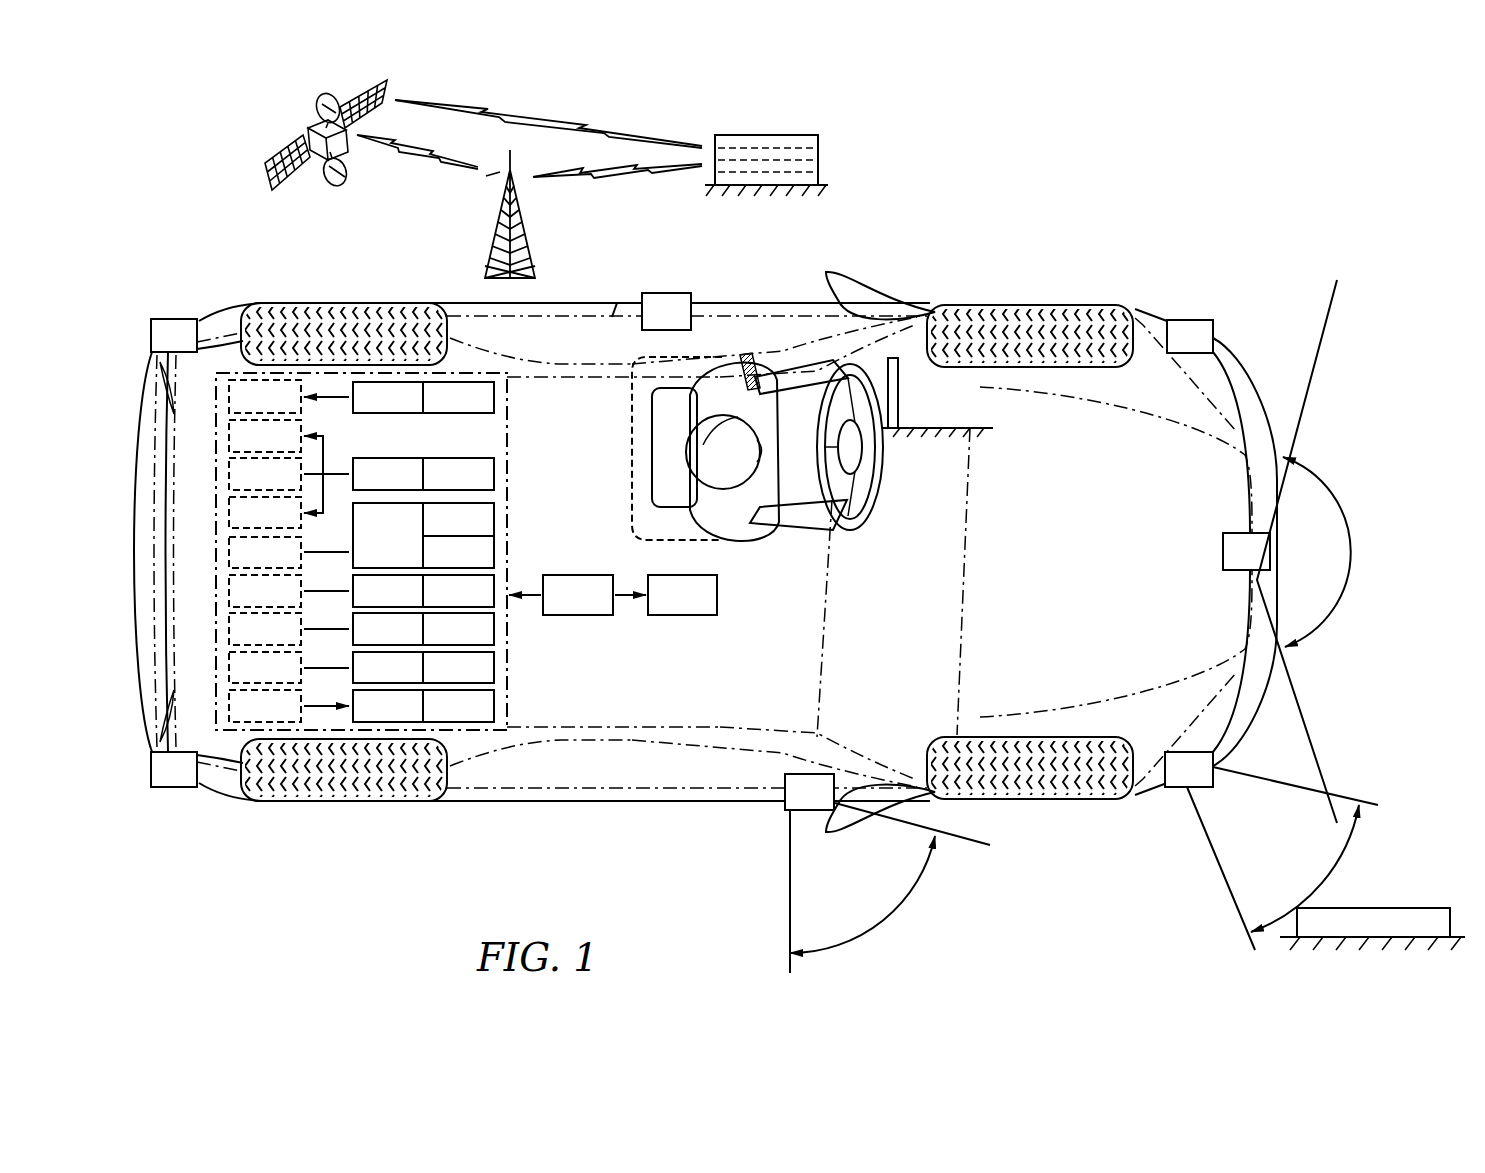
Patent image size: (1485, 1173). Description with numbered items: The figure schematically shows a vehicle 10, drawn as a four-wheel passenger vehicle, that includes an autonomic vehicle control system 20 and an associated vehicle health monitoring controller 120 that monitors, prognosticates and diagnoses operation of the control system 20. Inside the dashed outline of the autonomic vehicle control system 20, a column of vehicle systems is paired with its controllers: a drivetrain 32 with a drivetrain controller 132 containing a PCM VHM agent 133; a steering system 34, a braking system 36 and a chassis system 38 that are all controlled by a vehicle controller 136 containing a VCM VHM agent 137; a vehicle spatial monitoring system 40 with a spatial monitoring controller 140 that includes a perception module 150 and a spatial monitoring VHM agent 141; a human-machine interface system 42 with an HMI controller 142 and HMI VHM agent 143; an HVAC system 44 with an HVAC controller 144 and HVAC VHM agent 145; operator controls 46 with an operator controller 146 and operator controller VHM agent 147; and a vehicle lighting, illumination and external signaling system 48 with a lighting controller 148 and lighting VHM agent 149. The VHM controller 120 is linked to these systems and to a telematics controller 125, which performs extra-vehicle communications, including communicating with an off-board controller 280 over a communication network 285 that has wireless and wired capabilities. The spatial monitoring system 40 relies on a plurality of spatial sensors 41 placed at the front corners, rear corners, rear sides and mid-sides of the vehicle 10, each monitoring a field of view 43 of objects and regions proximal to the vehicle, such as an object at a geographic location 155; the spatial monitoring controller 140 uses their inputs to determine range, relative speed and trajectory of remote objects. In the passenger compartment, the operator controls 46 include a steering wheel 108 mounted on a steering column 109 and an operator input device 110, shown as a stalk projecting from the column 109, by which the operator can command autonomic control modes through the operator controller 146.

The vehicle 10 is at (203, 165).
The autonomic vehicle control system 20 is at (229, 555).
The drivetrain 32 is at (265, 396).
The steering system 34 is at (265, 435).
The braking system 36 is at (265, 473).
The chassis system 38 is at (265, 511).
The vehicle spatial monitoring system 40 is at (265, 551).
The spatial sensors 41 is at (710, 551).
The human-machine interface (HMI) system 42 is at (265, 590).
The field of view 43 is at (1322, 482).
The HVAC system 44 is at (265, 628).
The operator controls 46 is at (265, 667).
The vehicle lighting, illumination and external signaling system 48 is at (265, 705).
The steering wheel 108 is at (880, 473).
The steering column 109 is at (910, 427).
The operator input device 110 is at (900, 402).
The vehicle health monitoring (VHM) controller 120 is at (578, 595).
The telematics controller 125 is at (682, 595).
The drivetrain controller (PCM) 132 is at (388, 396).
The PCM VHM agent 133 is at (458, 396).
The vehicle controller (VCM) 136 is at (388, 473).
The VCM VHM agent 137 is at (458, 473).
The spatial monitoring controller 140 is at (388, 535).
The spatial monitoring VHM agent 141 is at (458, 551).
The HMI controller 142 is at (388, 590).
The HMI VHM agent 143 is at (458, 590).
The HVAC controller 144 is at (388, 628).
The HVAC VHM agent 145 is at (458, 628).
The operator controller 146 is at (388, 667).
The operator controller VHM agent 147 is at (458, 667).
The lighting controller 148 is at (388, 705).
The lighting VHM agent 149 is at (458, 705).
The perception module 150 is at (458, 519).
The geographic location 155 is at (1425, 905).
The off-board controller 280 is at (824, 150).
The communication network 285 is at (347, 145).